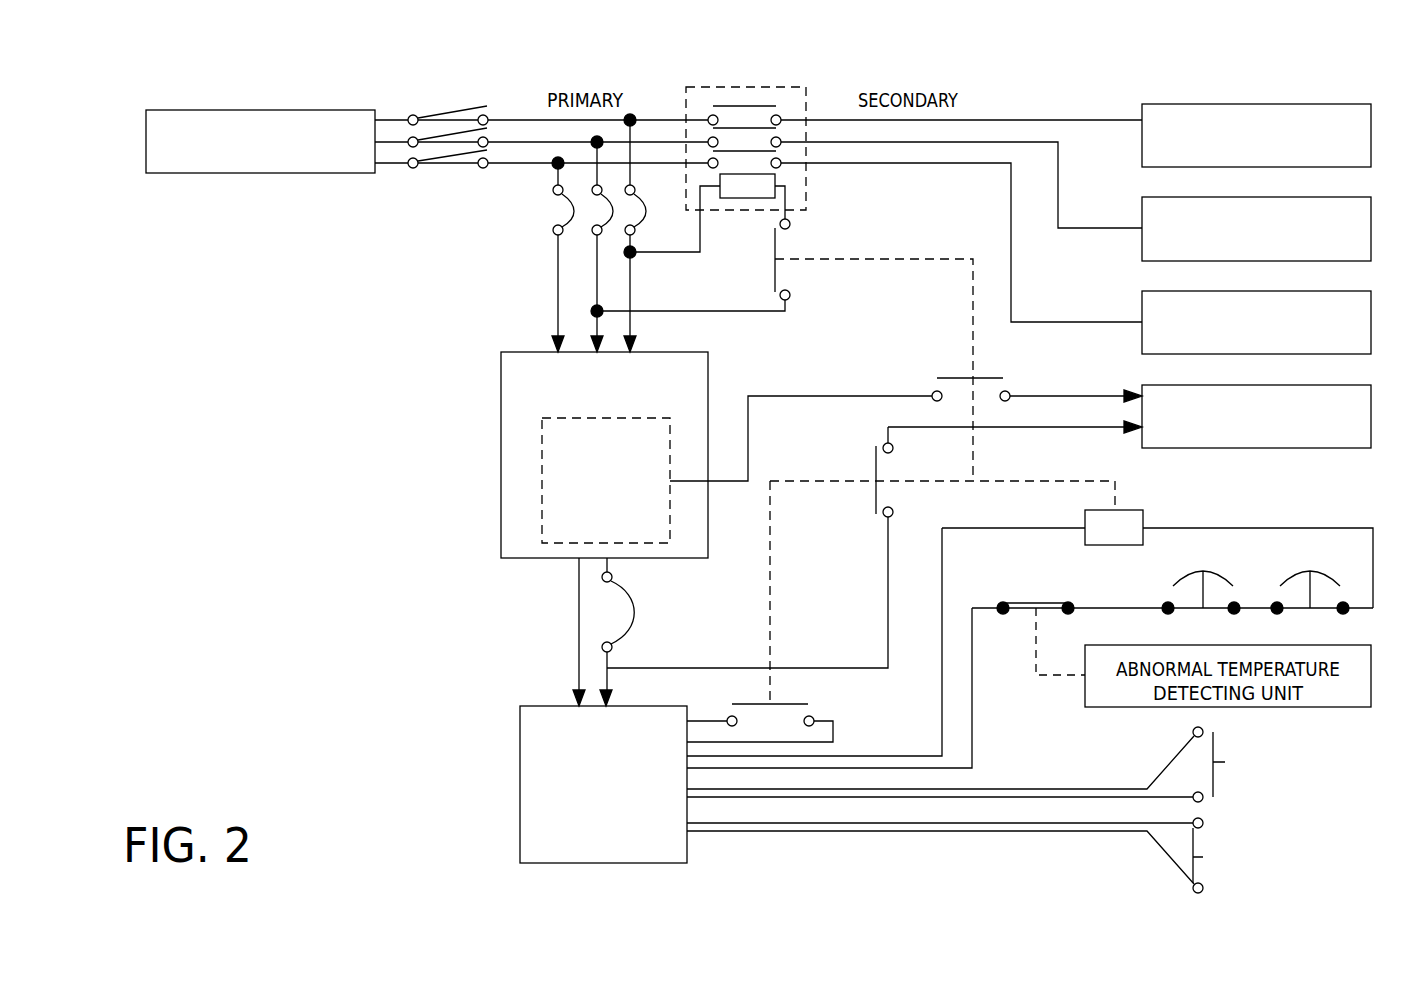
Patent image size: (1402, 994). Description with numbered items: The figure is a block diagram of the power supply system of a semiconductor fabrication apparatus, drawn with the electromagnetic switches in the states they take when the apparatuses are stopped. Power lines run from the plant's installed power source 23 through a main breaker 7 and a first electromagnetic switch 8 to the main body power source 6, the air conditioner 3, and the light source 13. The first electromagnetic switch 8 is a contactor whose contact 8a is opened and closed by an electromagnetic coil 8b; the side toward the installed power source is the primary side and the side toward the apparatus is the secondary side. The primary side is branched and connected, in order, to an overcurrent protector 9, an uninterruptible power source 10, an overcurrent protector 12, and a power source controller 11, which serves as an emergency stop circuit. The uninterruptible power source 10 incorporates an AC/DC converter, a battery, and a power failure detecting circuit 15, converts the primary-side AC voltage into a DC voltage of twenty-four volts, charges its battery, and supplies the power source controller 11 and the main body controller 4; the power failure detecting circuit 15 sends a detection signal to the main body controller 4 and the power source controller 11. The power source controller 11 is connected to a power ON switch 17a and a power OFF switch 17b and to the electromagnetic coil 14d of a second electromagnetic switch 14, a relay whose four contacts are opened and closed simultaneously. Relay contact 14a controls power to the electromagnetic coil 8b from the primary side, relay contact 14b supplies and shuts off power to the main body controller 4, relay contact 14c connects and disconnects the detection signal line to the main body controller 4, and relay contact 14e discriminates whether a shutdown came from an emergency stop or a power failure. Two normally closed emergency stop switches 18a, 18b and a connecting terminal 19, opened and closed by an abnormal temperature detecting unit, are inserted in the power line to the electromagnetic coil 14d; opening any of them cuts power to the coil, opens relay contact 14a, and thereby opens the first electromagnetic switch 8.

The installed power source 23 is at (168, 110).
The main breaker 7 is at (442, 104).
The first electromagnetic switch 8 is at (772, 116).
The contact 8a is at (726, 107).
The electromagnetic coil 8b is at (776, 181).
The overcurrent protector 9 is at (642, 198).
The air conditioner 3 is at (1142, 104).
The main body power source 6 is at (1142, 197).
The light source 13 is at (1142, 291).
The main body controller 4 is at (1142, 385).
The second electromagnetic switch 14 is at (988, 474).
The relay contact 14a is at (772, 273).
The relay contact 14b is at (876, 450).
The relay contact 14c is at (950, 378).
The electromagnetic coil 14d is at (1130, 510).
The relay contact 14e is at (808, 700).
The uninterruptible power source 10 is at (567, 455).
The power failure detecting circuit 15 is at (532, 509).
The overcurrent protector 12 is at (637, 614).
The power source controller 11 is at (520, 731).
The connecting terminal 19 is at (1022, 603).
The emergency stop switch 18a is at (1218, 578).
The emergency stop switch 18b is at (1326, 578).
The power ON switch 17a is at (1215, 748).
The power OFF switch 17b is at (1197, 873).